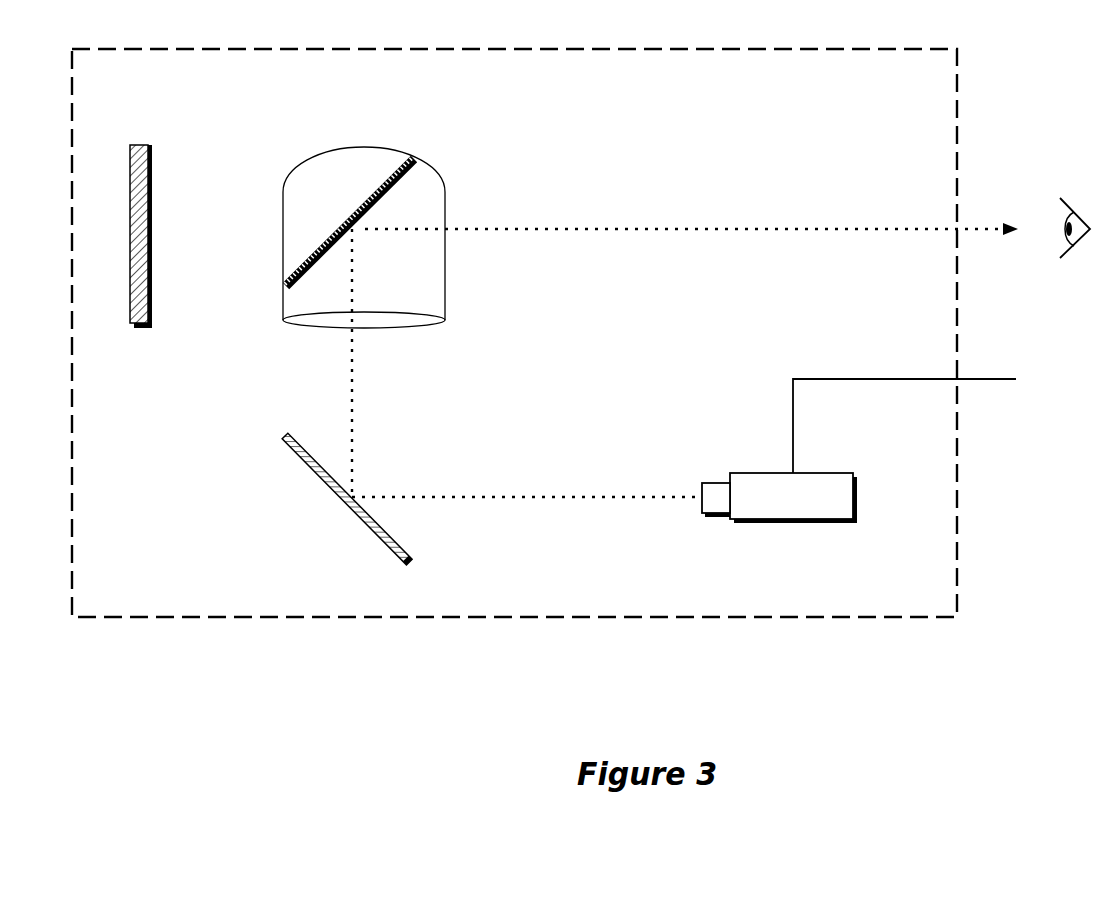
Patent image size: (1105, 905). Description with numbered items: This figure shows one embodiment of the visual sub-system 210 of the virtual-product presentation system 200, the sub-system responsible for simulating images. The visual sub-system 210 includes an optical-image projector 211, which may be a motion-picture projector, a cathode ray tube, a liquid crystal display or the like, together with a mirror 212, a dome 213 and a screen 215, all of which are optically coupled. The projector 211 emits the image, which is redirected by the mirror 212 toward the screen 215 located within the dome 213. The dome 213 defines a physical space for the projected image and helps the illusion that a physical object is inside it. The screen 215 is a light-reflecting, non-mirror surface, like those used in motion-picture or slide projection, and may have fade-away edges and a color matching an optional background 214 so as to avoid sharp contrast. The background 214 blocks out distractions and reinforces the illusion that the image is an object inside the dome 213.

The virtual-product presentation system 200 is at (934, 423).
The visual sub-system 210 is at (957, 557).
The optical-image projector 211 is at (779, 498).
The mirror 212 is at (285, 443).
The dome 213 is at (380, 146).
The background 214 is at (152, 148).
The screen 215 is at (350, 213).